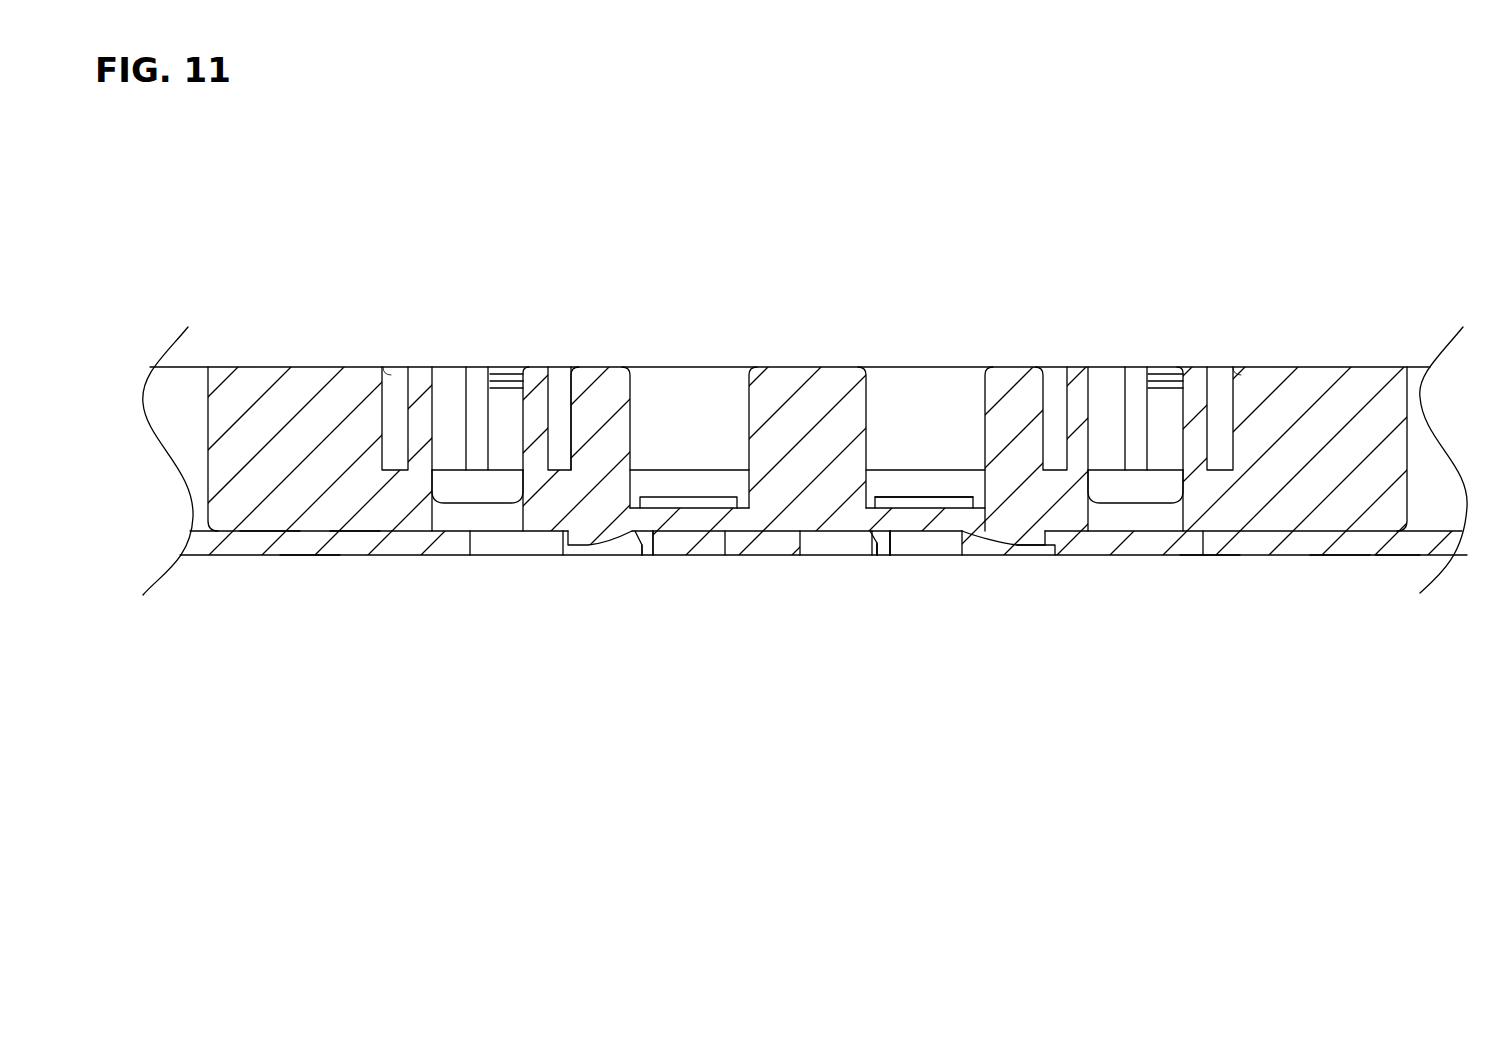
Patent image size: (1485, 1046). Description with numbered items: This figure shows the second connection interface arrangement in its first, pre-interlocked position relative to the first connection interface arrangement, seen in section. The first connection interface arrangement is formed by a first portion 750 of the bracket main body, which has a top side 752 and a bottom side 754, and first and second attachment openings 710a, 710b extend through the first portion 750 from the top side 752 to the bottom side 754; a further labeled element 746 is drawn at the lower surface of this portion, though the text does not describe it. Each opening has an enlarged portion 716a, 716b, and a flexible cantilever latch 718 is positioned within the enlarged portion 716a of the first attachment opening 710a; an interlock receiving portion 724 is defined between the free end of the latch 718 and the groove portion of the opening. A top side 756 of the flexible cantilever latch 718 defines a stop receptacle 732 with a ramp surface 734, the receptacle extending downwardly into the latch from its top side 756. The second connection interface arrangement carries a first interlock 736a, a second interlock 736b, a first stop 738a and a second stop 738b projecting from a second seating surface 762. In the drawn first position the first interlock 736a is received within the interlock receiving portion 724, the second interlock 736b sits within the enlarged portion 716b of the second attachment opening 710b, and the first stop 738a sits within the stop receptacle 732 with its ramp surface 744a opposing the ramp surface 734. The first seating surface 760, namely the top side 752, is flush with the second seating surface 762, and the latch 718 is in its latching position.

The top side 752 is at (304, 531).
The first seating surface 760 is at (357, 531).
The second seating surface 762 is at (265, 531).
The bottom side 754 is at (312, 555).
The second stop 738b is at (588, 557).
The second attachment opening 710b is at (648, 557).
The enlarged portion 716b is at (640, 614).
The second interlock 736b is at (703, 557).
The interlock receiving portion 724 is at (882, 556).
The first attachment opening 710a is at (878, 556).
The enlarged portion 716a is at (865, 648).
The first interlock 736a is at (940, 557).
The ramp surface 744a is at (988, 535).
The ramp surface 734 is at (1006, 550).
The first stop 738a is at (1020, 557).
The stop receptacle 732 is at (1042, 557).
The top side 756 is at (1143, 531).
The flexible cantilever latch 718 is at (1205, 555).
The first portion 750 is at (1340, 555).
The lower surface 746 is at (1394, 560).